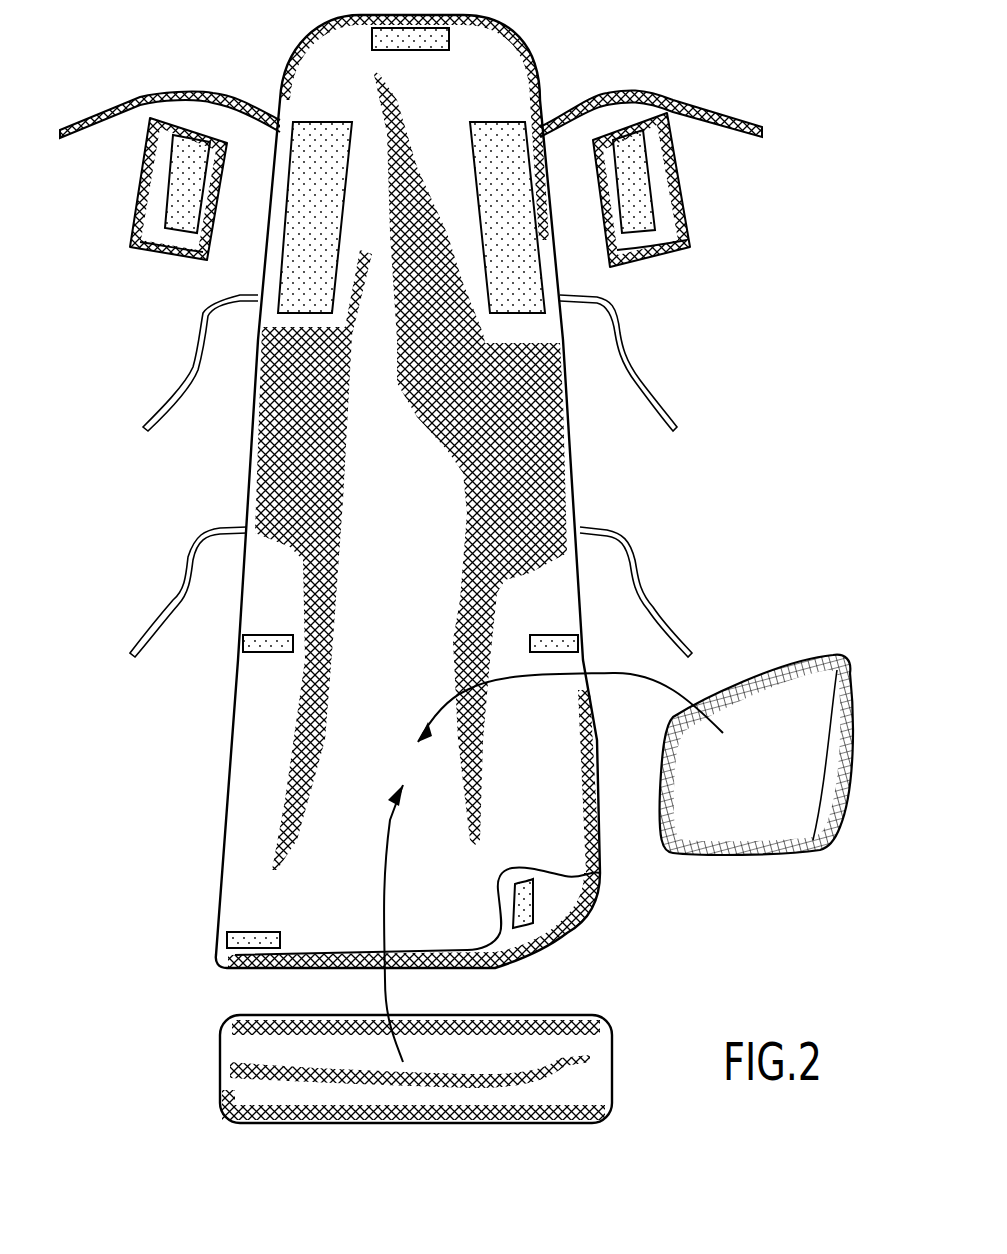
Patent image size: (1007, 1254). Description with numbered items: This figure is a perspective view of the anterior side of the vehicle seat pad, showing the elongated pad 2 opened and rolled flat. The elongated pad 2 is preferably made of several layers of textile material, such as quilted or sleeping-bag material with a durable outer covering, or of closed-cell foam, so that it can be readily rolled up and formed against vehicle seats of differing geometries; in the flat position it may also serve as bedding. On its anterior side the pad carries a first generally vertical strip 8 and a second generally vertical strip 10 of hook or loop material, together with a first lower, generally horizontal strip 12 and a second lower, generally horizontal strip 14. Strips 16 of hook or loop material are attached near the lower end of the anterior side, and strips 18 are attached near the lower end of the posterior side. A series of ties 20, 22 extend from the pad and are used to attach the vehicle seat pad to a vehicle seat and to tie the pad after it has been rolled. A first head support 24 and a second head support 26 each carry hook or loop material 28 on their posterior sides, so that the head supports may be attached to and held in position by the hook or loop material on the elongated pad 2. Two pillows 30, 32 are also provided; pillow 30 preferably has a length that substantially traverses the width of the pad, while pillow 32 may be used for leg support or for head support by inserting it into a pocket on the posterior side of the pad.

The elongated pad 2 is at (277, 468).
The first generally vertical strip 8 is at (320, 133).
The second strip 10 is at (488, 140).
The first lower and generally horizontal strip 12 is at (243, 643).
The second lower and generally horizontal strip 14 is at (570, 642).
The strips 16 is at (247, 933).
The strips 18 is at (528, 903).
The ties 20 is at (80, 130).
The ties 22 is at (165, 397).
The first head support 24 is at (155, 252).
The second head support 26 is at (660, 252).
The hook or loop material 28 is at (180, 203).
The pillow 30 is at (595, 1042).
The pillow 32 is at (742, 842).